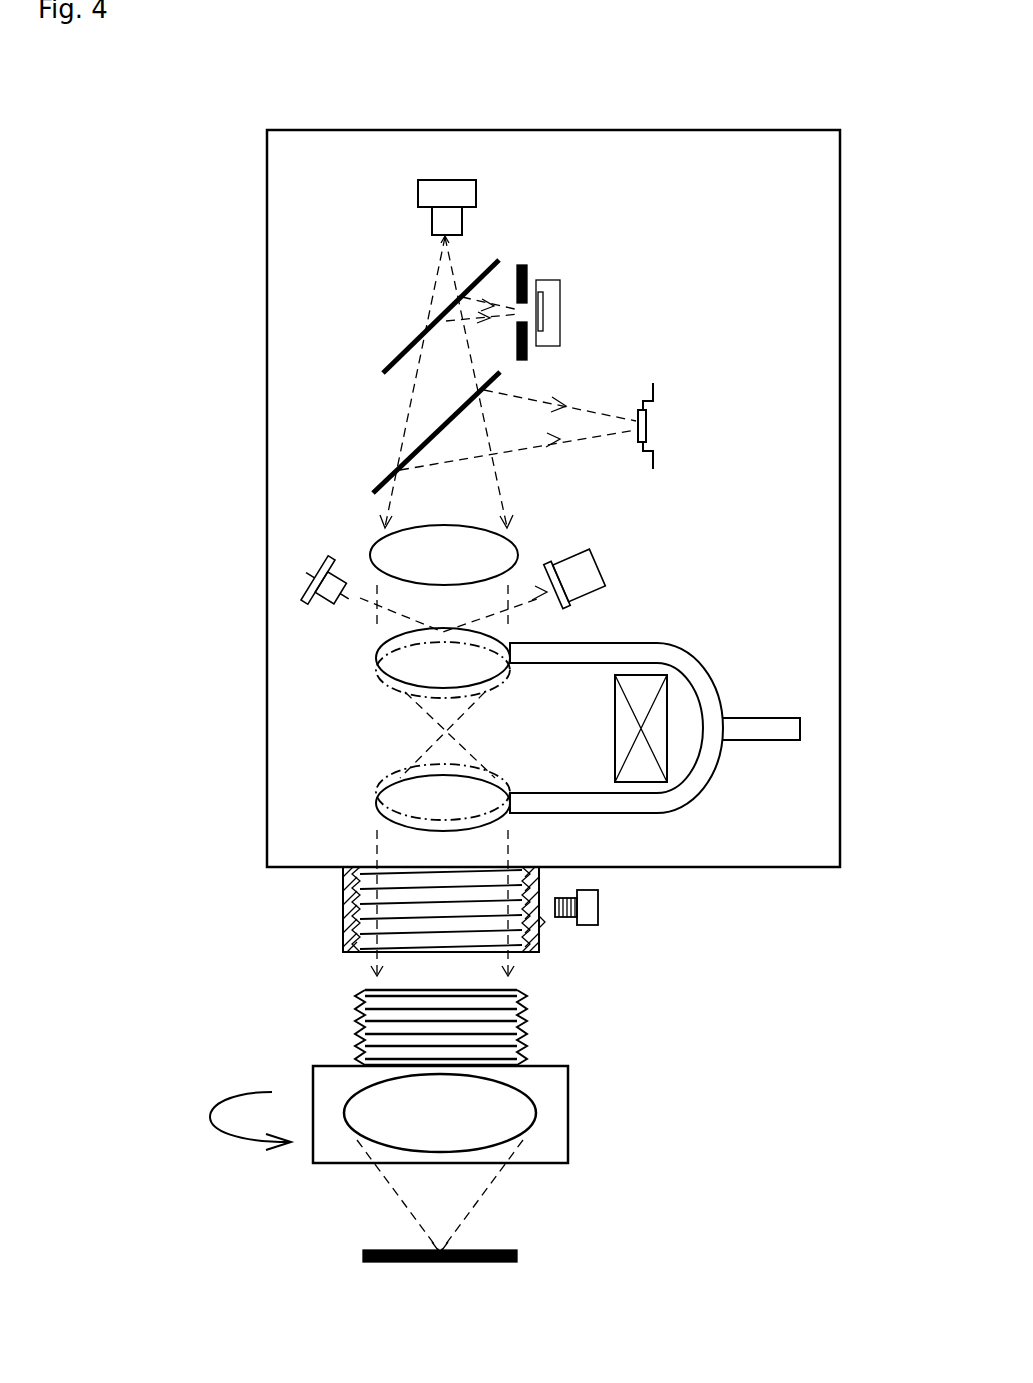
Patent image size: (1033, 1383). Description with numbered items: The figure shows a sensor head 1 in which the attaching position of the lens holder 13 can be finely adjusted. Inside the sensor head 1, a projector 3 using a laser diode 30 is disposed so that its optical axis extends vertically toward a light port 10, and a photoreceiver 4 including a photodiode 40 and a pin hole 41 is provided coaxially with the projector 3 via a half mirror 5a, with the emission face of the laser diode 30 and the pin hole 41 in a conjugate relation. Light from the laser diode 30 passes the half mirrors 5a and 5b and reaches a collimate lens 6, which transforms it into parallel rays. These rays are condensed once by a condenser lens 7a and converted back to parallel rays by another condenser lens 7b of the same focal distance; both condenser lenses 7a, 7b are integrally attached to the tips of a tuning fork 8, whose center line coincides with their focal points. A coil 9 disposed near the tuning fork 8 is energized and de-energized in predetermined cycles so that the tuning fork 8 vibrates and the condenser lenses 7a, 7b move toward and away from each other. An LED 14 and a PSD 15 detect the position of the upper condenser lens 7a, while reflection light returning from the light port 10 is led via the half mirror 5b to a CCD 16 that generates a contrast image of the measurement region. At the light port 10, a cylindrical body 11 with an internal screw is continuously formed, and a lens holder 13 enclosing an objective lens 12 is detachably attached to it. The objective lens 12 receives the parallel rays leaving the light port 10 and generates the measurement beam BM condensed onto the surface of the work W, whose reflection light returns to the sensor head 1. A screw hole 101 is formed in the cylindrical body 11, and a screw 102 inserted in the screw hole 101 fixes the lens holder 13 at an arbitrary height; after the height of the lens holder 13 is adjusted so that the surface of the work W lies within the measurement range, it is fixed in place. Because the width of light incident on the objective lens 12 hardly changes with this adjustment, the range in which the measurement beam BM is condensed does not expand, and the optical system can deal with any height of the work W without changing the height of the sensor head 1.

The sensor head 1 is at (748, 120).
The projector 3 is at (479, 171).
The laser diode 30 is at (462, 224).
The photoreceiver 4 is at (655, 250).
The photodiode 40 is at (545, 313).
The pin hole 41 is at (542, 297).
The half mirror 5a is at (400, 360).
The half mirror 5b is at (388, 480).
The CCD 16 is at (650, 421).
The collimate lens 6 is at (510, 552).
The LED 14 is at (318, 604).
The PSD 15 is at (585, 558).
The condenser lens 7a is at (505, 632).
The condenser lens 7b is at (510, 820).
The tuning fork 8 is at (712, 672).
The coil 9 is at (643, 676).
The light port 10 is at (545, 872).
The cylindrical body 11 is at (343, 905).
The screw hole 101 is at (540, 930).
The screw 102 is at (600, 907).
The lens holder 13 is at (540, 1073).
The objective lens 12 is at (528, 1105).
The work W is at (380, 1250).
The measurement beam BM is at (482, 1200).